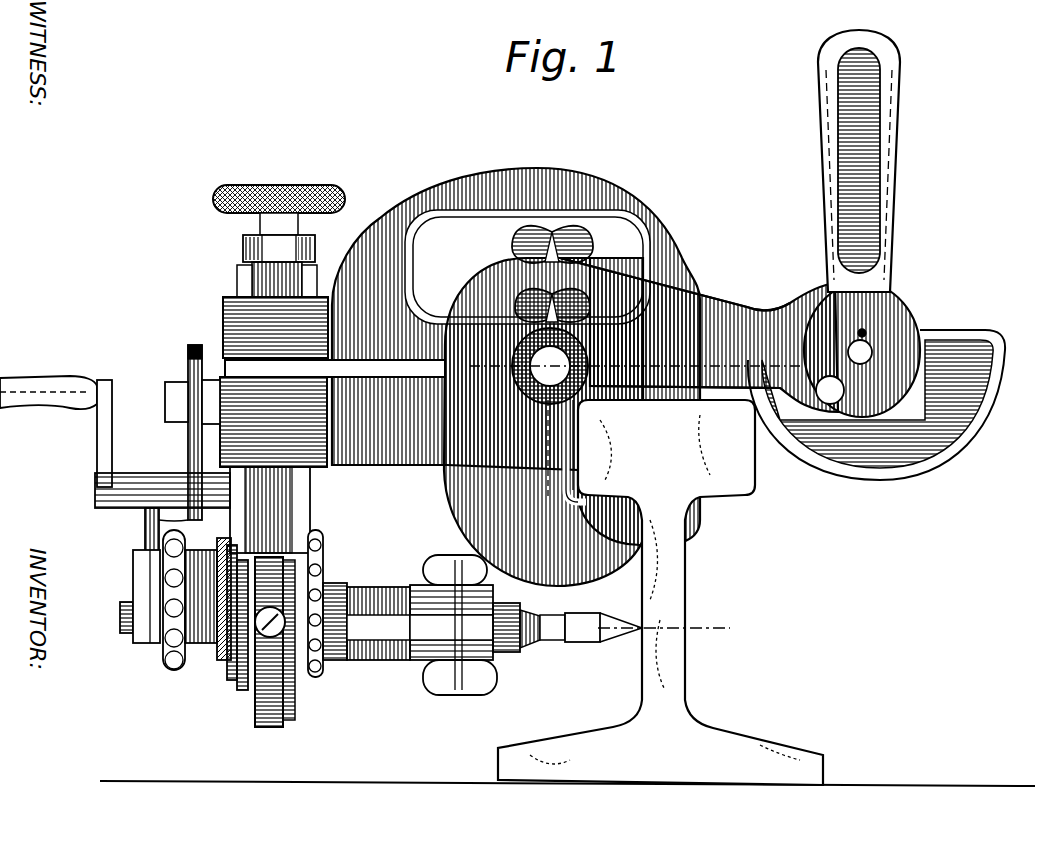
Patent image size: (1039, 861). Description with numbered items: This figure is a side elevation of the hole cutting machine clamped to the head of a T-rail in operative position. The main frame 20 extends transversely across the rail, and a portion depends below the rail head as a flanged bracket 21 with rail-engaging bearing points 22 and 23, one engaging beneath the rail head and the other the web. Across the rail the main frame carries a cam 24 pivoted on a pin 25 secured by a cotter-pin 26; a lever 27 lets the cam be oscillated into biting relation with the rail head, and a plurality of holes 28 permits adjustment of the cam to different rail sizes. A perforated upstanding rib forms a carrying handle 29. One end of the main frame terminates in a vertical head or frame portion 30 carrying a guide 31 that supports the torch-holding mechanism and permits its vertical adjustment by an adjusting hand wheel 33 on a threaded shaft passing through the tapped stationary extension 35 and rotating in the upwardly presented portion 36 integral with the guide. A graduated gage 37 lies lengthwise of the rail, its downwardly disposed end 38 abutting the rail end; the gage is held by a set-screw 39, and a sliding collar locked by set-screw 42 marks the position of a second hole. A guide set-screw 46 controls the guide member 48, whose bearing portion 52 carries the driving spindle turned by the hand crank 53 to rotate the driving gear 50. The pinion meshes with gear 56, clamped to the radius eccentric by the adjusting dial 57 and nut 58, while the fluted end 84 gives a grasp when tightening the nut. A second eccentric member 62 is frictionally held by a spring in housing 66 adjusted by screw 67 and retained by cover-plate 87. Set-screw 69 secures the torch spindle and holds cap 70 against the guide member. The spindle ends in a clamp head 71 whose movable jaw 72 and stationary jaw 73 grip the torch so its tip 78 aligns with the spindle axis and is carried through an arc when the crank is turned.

The main frame 20 is at (742, 302).
The flanged bracket 21 is at (480, 500).
The rail-engaging bearing point 22 is at (642, 495).
The rail-engaging bearing point 23 is at (646, 544).
The cam 24 is at (945, 345).
The pin 25 is at (872, 344).
The cotter-pin 26 is at (868, 335).
The lever 27 is at (888, 170).
The holes 28 is at (816, 410).
The handle 29 is at (516, 170).
The head or frame portion 30 is at (224, 318).
The guide 31 is at (240, 284).
The adjusting hand wheel 33 is at (286, 186).
The tapped stationary extension 35 is at (318, 292).
The upwardly presented portion 36 is at (310, 250).
The gage 37 is at (580, 338).
The downwardly disposed end 38 is at (712, 292).
The set-screw 39 is at (598, 236).
The set-screw 42 is at (592, 292).
The guide set-screw 46 is at (170, 384).
The guide member 48 is at (188, 438).
The driving gear 50 is at (222, 518).
The bearing portion 52 is at (136, 476).
The hand crank 53 is at (98, 438).
The gear 56 is at (230, 684).
The adjusting dial 57 is at (214, 646).
The nut 58 is at (172, 663).
The second eccentric member 62 is at (245, 694).
The housing 66 is at (222, 662).
The adjusting plug or screw 67 is at (327, 661).
The set-screw 69 is at (120, 612).
The cap 70 is at (133, 569).
The clamp head portion 71 is at (368, 596).
The movable jaw 72 is at (496, 656).
The stationary jaw 73 is at (432, 560).
The torch tip 78 is at (556, 643).
The fluted end 84 is at (322, 546).
The cover-plate 87 is at (292, 702).